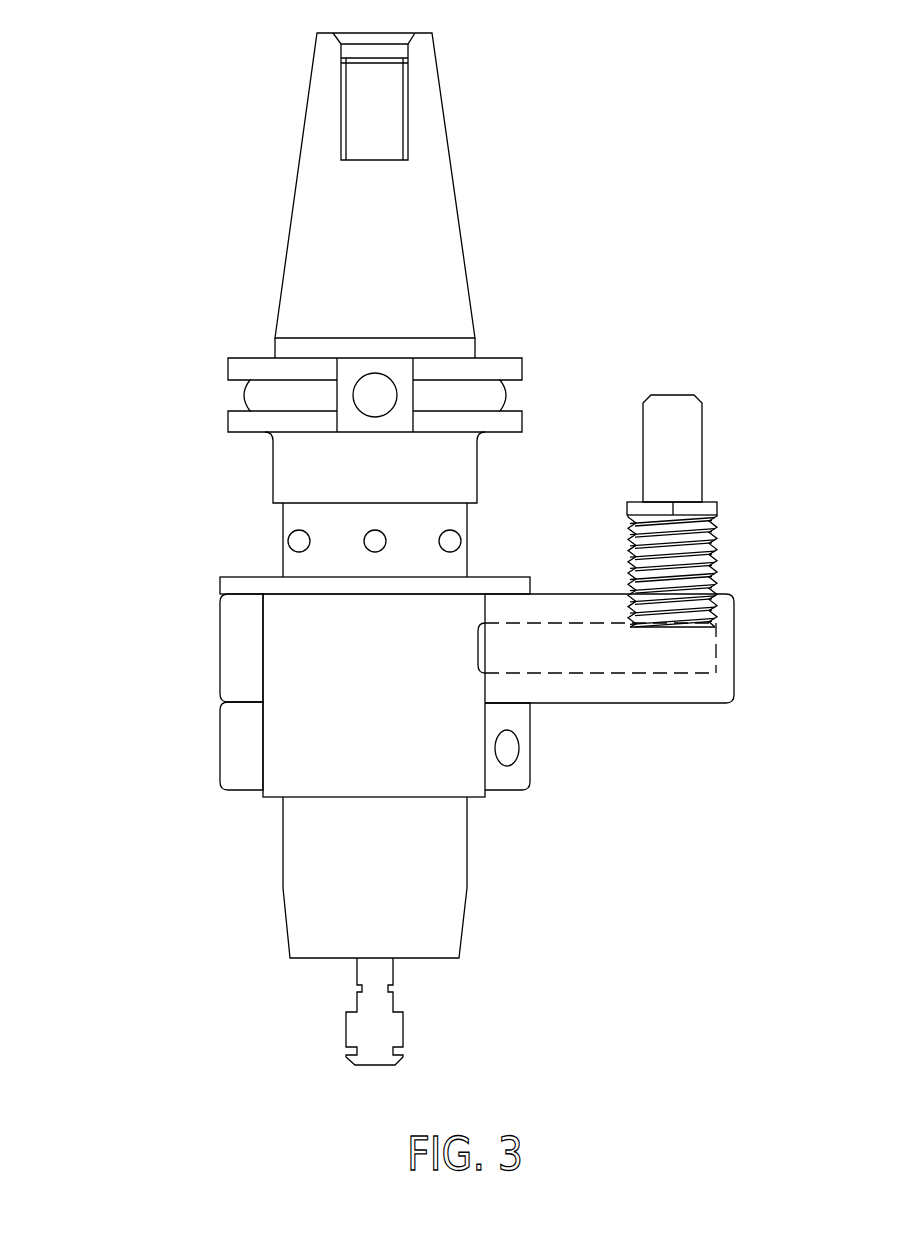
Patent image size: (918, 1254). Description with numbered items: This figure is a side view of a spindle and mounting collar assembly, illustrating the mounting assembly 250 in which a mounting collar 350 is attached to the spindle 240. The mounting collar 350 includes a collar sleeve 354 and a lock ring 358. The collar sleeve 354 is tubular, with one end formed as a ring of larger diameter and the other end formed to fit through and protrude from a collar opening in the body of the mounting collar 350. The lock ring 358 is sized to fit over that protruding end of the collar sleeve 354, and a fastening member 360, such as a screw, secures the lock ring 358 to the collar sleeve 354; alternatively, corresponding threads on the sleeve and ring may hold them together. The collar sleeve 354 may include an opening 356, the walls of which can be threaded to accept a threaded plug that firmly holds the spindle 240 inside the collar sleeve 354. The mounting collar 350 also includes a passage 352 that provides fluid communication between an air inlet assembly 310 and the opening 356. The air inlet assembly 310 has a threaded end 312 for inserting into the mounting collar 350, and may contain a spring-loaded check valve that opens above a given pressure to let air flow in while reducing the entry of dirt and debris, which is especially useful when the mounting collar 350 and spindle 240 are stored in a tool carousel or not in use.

The spindle 240 is at (467, 908).
The mounting assembly 250 is at (178, 759).
The air inlet assembly 310 is at (703, 441).
The threaded end 312 is at (718, 546).
The mounting collar 350 is at (680, 703).
The passage 352 is at (716, 650).
The collar sleeve 354 is at (503, 577).
The opening 356 is at (476, 648).
The lock ring 358 is at (530, 770).
The fastening member 360 is at (512, 748).